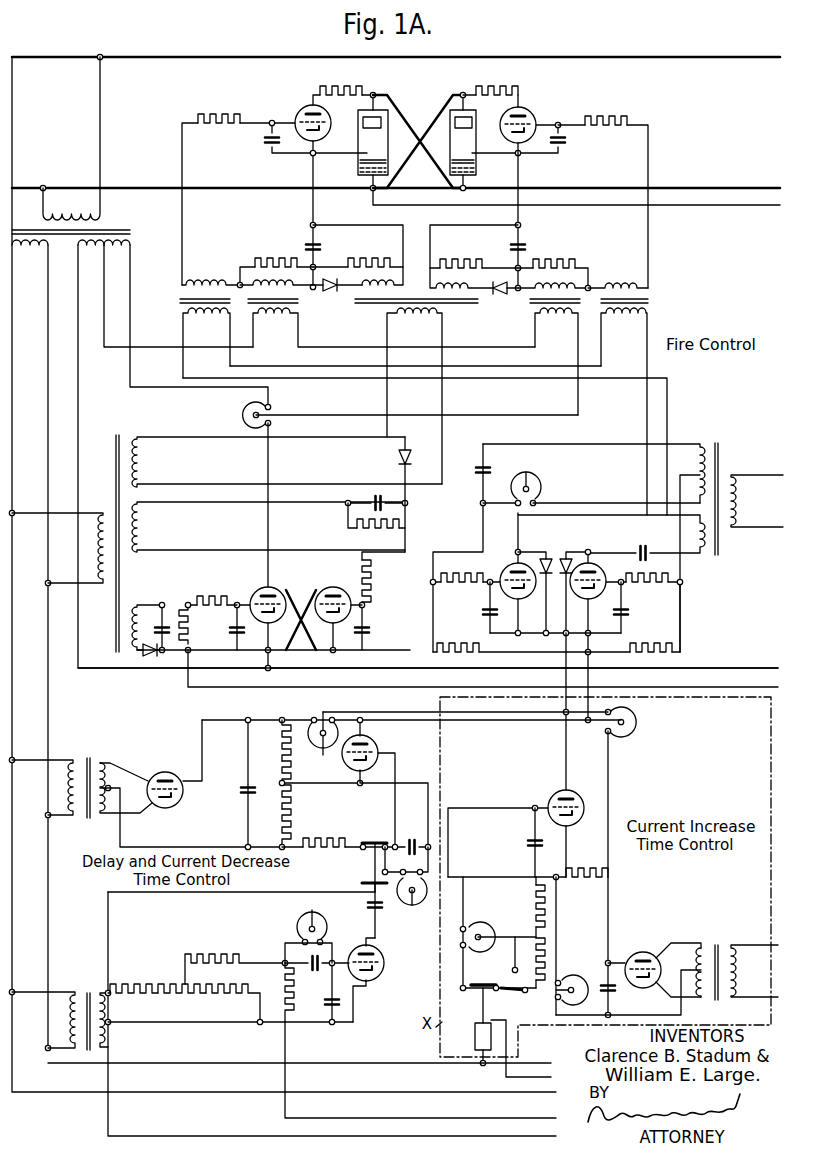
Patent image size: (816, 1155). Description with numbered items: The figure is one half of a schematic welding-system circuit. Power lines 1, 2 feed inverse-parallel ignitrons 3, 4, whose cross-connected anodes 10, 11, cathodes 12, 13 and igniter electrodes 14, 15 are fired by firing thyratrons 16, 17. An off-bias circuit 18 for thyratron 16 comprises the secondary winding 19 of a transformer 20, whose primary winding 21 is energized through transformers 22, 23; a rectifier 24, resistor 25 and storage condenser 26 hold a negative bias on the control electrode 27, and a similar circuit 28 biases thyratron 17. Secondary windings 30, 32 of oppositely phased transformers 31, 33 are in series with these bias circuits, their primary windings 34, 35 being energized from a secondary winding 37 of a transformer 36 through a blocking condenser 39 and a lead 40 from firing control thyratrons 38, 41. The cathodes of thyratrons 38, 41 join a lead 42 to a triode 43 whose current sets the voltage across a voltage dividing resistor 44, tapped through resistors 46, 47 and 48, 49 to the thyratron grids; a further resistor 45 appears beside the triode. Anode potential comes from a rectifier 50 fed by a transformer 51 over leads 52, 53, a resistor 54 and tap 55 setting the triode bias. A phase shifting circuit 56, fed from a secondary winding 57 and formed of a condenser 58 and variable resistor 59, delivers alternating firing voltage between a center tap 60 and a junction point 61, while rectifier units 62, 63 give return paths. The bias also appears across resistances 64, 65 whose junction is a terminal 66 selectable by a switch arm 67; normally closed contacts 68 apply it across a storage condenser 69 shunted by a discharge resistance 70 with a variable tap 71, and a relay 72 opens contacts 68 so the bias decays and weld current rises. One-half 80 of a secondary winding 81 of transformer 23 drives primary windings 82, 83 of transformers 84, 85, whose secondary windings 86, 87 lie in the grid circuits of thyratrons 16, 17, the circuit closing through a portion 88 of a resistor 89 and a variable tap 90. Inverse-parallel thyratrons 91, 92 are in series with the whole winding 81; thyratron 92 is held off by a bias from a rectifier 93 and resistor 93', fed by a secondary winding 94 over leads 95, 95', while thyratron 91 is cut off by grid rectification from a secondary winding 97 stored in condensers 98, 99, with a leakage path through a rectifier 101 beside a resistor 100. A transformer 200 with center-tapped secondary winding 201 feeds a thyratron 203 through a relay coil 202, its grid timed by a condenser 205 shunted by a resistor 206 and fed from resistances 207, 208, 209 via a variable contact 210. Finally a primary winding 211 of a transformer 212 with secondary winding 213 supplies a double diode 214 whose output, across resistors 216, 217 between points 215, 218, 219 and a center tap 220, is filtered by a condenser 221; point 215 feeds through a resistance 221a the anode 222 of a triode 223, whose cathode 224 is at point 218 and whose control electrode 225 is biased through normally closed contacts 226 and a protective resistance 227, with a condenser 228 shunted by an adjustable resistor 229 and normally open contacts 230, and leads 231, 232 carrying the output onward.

The power supply line 1 is at (151, 52).
The power supply line 2 is at (150, 185).
The ignitron 3 is at (358, 115).
The ignitron 4 is at (476, 115).
The anode 10 is at (363, 124).
The anode 11 is at (472, 124).
The cathode 12 is at (360, 170).
The cathode 13 is at (474, 170).
The igniter electrode 14 is at (360, 161).
The igniter electrode 15 is at (474, 161).
The firing thyratron 16 is at (300, 110).
The firing thyratron 17 is at (527, 111).
The off-bias circuit 18 is at (366, 247).
The secondary winding 19 is at (372, 283).
The transformer 20 is at (409, 343).
The primary winding 21 is at (444, 318).
The transformer 22 is at (109, 430).
The transformer 23 is at (116, 229).
The rectifier 24 is at (331, 292).
The resistor 25 is at (325, 262).
The storage condenser 26 is at (306, 245).
The control electrode 27 is at (272, 128).
The bias circuit 28 is at (449, 247).
The secondary winding 30 is at (220, 282).
The transformer 31 is at (155, 310).
The secondary winding 32 is at (630, 283).
The transformer 33 is at (660, 310).
The primary winding 34 is at (206, 343).
The primary winding 35 is at (643, 322).
The transformer 36 is at (707, 431).
The secondary winding 37 is at (697, 554).
The firing control thyratron 38 is at (607, 575).
The D. C. blocking condenser 39 is at (645, 546).
The lead 40 is at (667, 413).
The firing control thyratron 41 is at (505, 569).
The lead 42 is at (547, 636).
The triode 43 is at (553, 794).
The voltage dividing resistor 44 is at (637, 717).
The resistor 45 is at (588, 873).
The resistor 46 is at (643, 586).
The resistor 47 is at (665, 650).
The resistor 48 is at (510, 636).
The resistor 49 is at (468, 586).
The rectifier 50 is at (661, 955).
The transformer 51 is at (727, 940).
The lead 52 is at (675, 1015).
The lead 53 is at (608, 920).
The resistor 54 is at (628, 1002).
The tap 55 is at (586, 978).
The phase shifting circuit 56 is at (554, 480).
The secondary winding 57 is at (698, 447).
The condenser 58 is at (480, 468).
The variable resistor 59 is at (529, 474).
The center tap 60 is at (698, 475).
The junction point 61 is at (480, 503).
The rectifier unit 62 is at (547, 557).
The rectifier unit 63 is at (567, 557).
The resistance 64 is at (536, 905).
The resistance 65 is at (545, 956).
The terminal 66 is at (513, 969).
The switch arm 67 is at (520, 992).
The contacts 68 is at (480, 990).
The storage condenser 69 is at (528, 843).
The discharge resistance 70 is at (484, 922).
The variable tap 71 is at (488, 932).
The relay 72 is at (473, 1030).
The half of secondary winding 80 is at (117, 258).
The secondary winding 81 is at (80, 275).
The primary winding 82 is at (292, 320).
The primary winding 83 is at (540, 320).
The transformer 84 is at (268, 343).
The transformer 85 is at (548, 343).
The secondary winding 86 is at (296, 300).
The secondary winding 87 is at (505, 294).
The resistor portion 88 is at (244, 407).
The resistor 89 is at (251, 428).
The variable tap 90 is at (250, 415).
The thyratron 91 is at (338, 615).
The thyratron 92 is at (260, 590).
The rectifier 93 is at (158, 665).
The resistor 93' is at (177, 616).
The secondary winding 94 is at (144, 617).
The lead 95 is at (428, 676).
The lead 95' is at (483, 678).
The secondary winding 97 is at (140, 527).
The storage condenser 98 is at (372, 590).
The storage condenser 99 is at (378, 495).
The resistor 100 is at (364, 534).
The rectifier 101 is at (398, 457).
The energizing transformer 200 is at (72, 983).
The secondary winding 201 is at (111, 1012).
The relay coil 202 is at (370, 904).
The thyratron 203 is at (383, 960).
The condenser 205 is at (285, 958).
The resistor 206 is at (298, 923).
The resistance 207 is at (150, 983).
The resistance 208 is at (182, 1000).
The resistance 209 is at (234, 1004).
The variable contact 210 is at (186, 969).
The primary winding 211 is at (70, 833).
The transformer 212 is at (76, 751).
The secondary winding 213 is at (108, 768).
The double diode vacuum tube 214 is at (168, 773).
The point 215 is at (283, 718).
The resistor 216 is at (282, 760).
The resistor 217 is at (282, 810).
The point 218 is at (286, 784).
The terminal 219 is at (282, 842).
The center tap 220 is at (108, 787).
The condenser 221 is at (240, 792).
The resistance 221a is at (327, 752).
The anode 222 is at (373, 741).
The triode 223 is at (370, 747).
The cathode 224 is at (370, 761).
The control electrode 225 is at (372, 754).
The contacts 226 is at (378, 841).
The protective resistance 227 is at (331, 838).
The condenser 228 is at (413, 840).
The adjustable resistor 229 is at (413, 906).
The contacts 230 is at (362, 883).
The lead 231 is at (468, 721).
The lead 232 is at (337, 718).